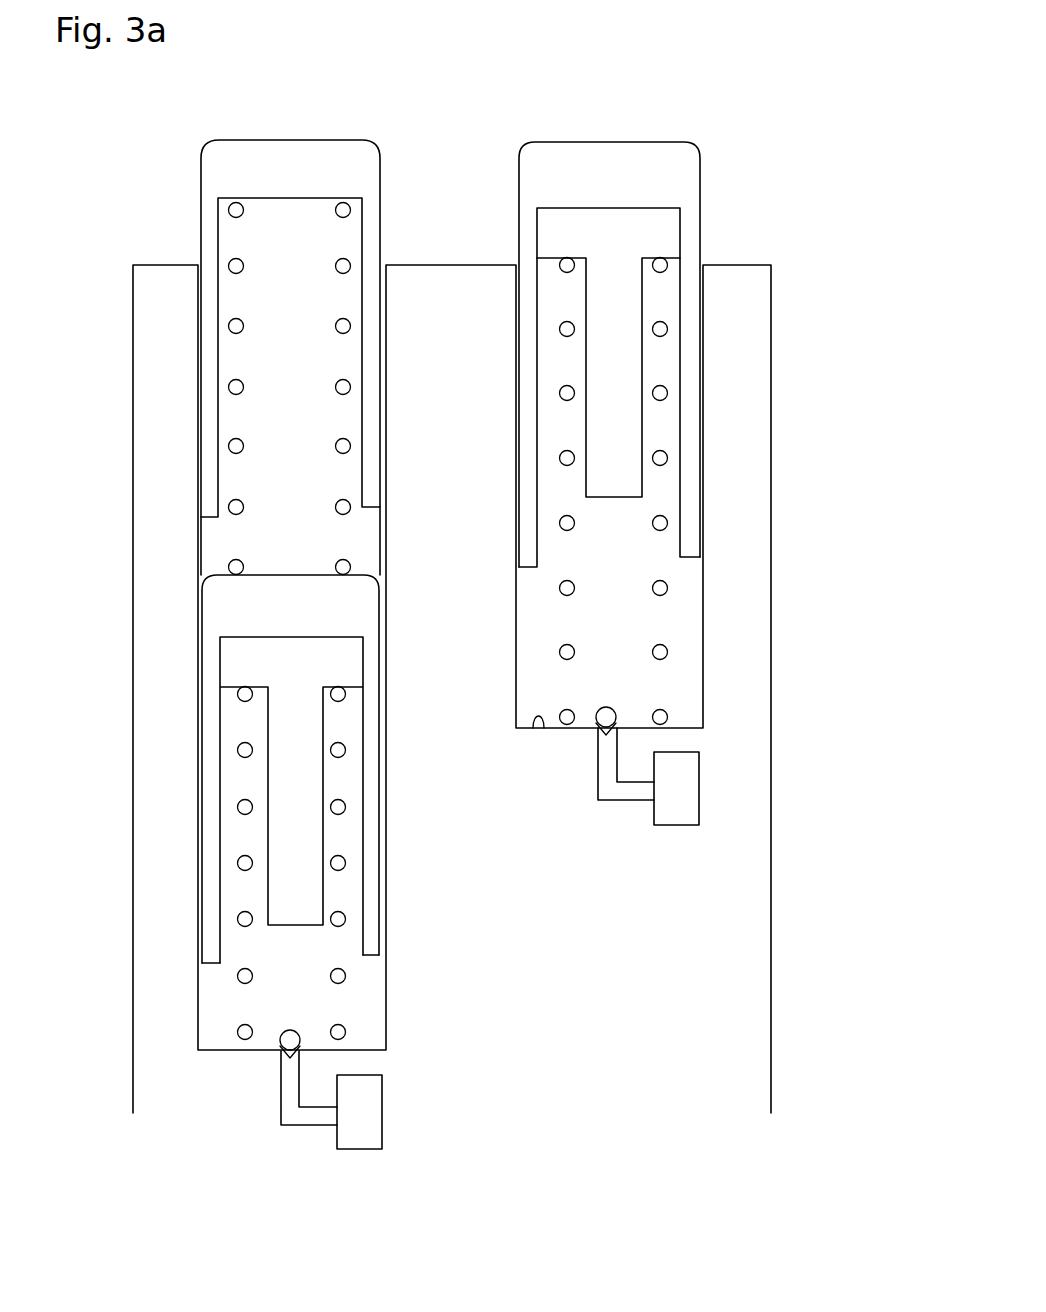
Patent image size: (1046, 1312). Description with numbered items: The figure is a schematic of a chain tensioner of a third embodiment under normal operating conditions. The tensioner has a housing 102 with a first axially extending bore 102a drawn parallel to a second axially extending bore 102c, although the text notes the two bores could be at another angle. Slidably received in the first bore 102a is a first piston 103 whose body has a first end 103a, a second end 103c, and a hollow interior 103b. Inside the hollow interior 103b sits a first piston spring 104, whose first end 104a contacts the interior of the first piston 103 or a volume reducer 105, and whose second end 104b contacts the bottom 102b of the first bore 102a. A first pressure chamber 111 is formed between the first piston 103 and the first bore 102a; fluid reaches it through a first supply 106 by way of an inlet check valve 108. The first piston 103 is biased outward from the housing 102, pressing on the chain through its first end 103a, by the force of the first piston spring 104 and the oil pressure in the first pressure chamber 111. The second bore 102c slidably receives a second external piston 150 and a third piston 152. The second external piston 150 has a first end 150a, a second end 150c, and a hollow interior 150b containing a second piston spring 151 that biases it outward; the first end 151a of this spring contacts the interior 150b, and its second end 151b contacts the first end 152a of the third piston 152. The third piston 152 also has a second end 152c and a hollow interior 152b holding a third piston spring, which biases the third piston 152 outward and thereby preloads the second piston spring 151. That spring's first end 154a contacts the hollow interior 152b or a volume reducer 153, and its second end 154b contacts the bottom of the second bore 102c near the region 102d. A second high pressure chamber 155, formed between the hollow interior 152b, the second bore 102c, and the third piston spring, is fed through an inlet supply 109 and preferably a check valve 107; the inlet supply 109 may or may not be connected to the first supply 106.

The housing 102 is at (771, 910).
The first axially extending bore 102a is at (704, 606).
The bottom of the first axially extending bore 102b is at (532, 728).
The second axially extending bore 102c is at (383, 995).
The board cutout 102d is at (214, 1050).
The first piston 103 is at (624, 197).
The first end of the first piston 103a is at (595, 142).
The hollow interior of the first piston 103b is at (636, 208).
The second end of the first piston 103c is at (683, 557).
The first piston spring 104 is at (665, 390).
The first end of the first piston spring 104a is at (665, 263).
The second end of the first piston spring 104b is at (668, 720).
The volume reducer 105 is at (629, 259).
The first supply 106 is at (625, 800).
The check valve 107 is at (280, 1045).
The inlet check valve 108 is at (612, 717).
The inlet supply 109 is at (305, 1125).
The first pressure chamber 111 is at (624, 575).
The second external piston 150 is at (304, 188).
The first end of the second external piston 150a is at (283, 140).
The hollow interior of the second external piston 150b is at (296, 198).
The second end of the second external piston 150c is at (368, 507).
The second piston spring 151 is at (228, 327).
The first end of the second piston spring 151a is at (230, 212).
The second end of the second piston spring 151b is at (230, 571).
The third piston 152 is at (308, 621).
The first end of the third piston 152a is at (292, 577).
The hollow interior of the third piston 152b is at (300, 637).
The second end of the third piston 152c is at (373, 955).
The volume reducer 153 is at (318, 686).
The first end of the third piston spring 154a is at (345, 697).
The second end of the third piston spring 154b is at (240, 978).
The second high pressure chamber 155 is at (313, 971).